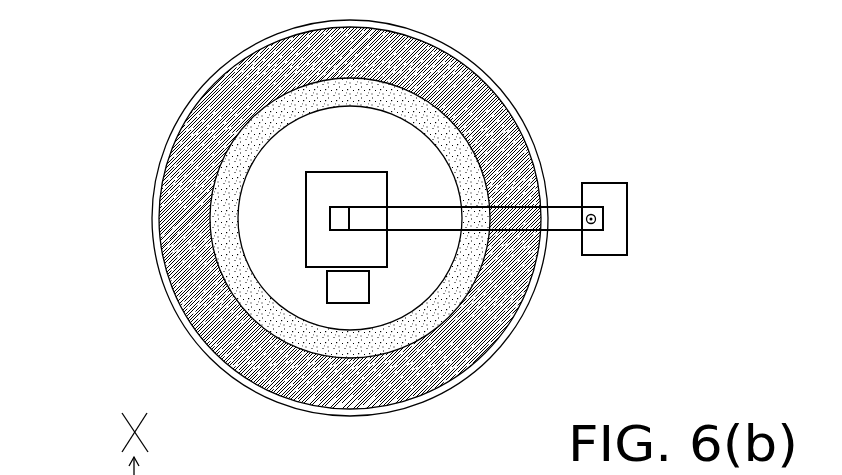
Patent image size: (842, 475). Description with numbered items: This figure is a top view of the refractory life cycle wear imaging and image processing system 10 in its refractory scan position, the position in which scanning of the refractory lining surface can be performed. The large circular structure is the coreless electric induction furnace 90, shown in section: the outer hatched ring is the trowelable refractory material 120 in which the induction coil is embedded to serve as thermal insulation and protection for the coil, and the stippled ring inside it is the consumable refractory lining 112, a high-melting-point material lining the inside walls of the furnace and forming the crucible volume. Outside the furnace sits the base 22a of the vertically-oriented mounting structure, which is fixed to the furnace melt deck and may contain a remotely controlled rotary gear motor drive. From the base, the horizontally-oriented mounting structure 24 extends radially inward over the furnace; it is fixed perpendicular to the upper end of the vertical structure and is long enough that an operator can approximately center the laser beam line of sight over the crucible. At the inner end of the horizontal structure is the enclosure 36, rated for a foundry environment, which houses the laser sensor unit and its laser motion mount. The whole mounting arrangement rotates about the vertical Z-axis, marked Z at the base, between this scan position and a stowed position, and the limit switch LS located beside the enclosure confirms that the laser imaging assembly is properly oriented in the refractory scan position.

The coreless electric induction furnace 90 is at (88, 202).
The trowelable refractory material 120 is at (463, 92).
The consumable refractory lining 112 is at (457, 147).
The enclosure 36 is at (343, 188).
The horizontally-oriented mounting structure 24 is at (565, 217).
The base 22a is at (611, 247).
The Z-axis Z is at (587, 220).
The refractory life cycle wear imaging and image processing system 10 is at (670, 203).
The limit switch LS is at (348, 287).